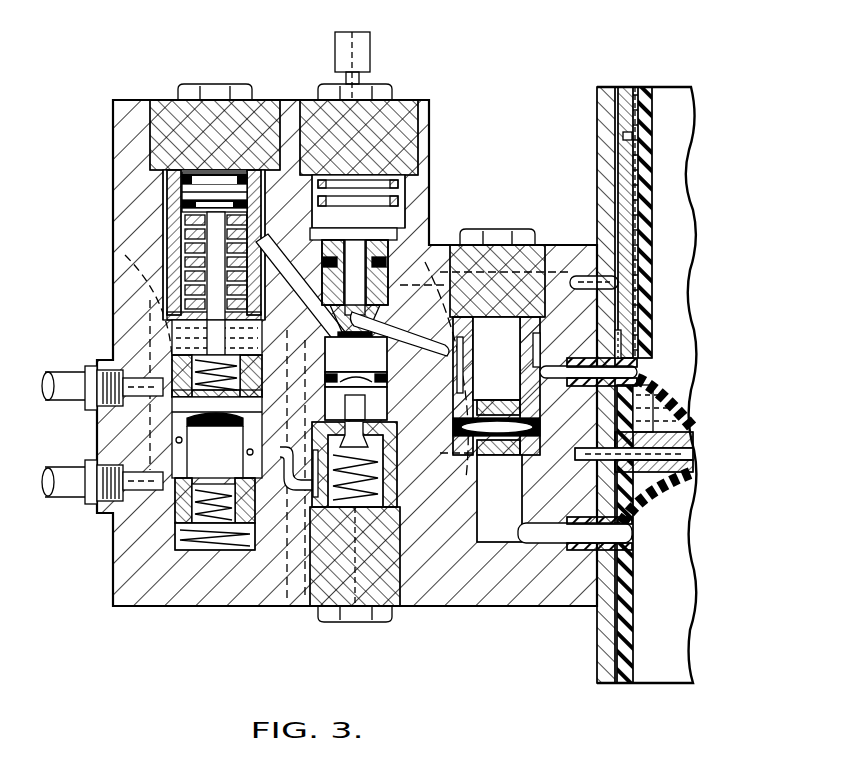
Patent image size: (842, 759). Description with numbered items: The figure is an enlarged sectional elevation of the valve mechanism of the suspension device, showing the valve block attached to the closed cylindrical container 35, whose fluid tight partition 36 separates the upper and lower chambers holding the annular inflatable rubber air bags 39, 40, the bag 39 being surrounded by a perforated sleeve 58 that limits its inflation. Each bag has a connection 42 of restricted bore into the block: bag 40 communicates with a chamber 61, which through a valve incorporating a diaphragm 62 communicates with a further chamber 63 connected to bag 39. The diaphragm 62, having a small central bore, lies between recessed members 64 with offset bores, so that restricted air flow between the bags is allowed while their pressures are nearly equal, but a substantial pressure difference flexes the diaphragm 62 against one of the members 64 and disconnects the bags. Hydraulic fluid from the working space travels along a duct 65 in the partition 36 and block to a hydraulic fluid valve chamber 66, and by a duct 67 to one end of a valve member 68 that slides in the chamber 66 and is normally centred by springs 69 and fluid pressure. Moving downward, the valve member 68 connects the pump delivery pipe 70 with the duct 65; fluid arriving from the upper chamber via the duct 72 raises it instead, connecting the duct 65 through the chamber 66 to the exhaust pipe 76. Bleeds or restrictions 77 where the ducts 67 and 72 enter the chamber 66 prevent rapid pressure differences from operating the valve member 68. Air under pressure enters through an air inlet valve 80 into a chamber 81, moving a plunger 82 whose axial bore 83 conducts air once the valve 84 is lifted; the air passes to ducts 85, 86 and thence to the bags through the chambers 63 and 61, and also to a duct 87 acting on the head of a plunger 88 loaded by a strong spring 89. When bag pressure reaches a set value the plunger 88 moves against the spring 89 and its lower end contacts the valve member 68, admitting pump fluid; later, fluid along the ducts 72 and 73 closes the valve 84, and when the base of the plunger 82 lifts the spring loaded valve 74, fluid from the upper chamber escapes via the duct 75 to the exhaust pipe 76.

The closed cylindrical container 35 is at (605, 100).
The fluid tight partition 36 is at (663, 425).
The inflatable rubber air bag 39 is at (670, 150).
The inflatable rubber air bag 40 is at (640, 634).
The connection 42 is at (638, 376).
The perforated sleeve 58 is at (625, 132).
The chamber 61 is at (503, 530).
The diaphragm 62 is at (540, 428).
The further chamber 63 is at (628, 358).
The recessed members 64 is at (493, 405).
The duct 65 is at (668, 470).
The hydraulic fluid valve chamber 66 is at (165, 456).
The duct 67 is at (175, 340).
The valve member 68 is at (165, 372).
The springs 69 is at (172, 355).
The delivery pipe 70 is at (80, 487).
The duct 72 is at (430, 310).
The duct 73 is at (478, 268).
The spring loaded valve 74 is at (352, 612).
The duct 75 is at (283, 410).
The exhaust pipe 76 is at (80, 396).
The bleeds or restrictions 77 is at (175, 325).
The air inlet valve 80 is at (362, 53).
The chamber 81 is at (395, 185).
The plunger 82 is at (382, 208).
The axial bore 83 is at (365, 255).
The valve 84 is at (497, 357).
The duct 85 is at (496, 386).
The duct 86 is at (457, 490).
The duct 87 is at (268, 250).
The plunger 88 is at (190, 195).
The strong spring 89 is at (180, 237).